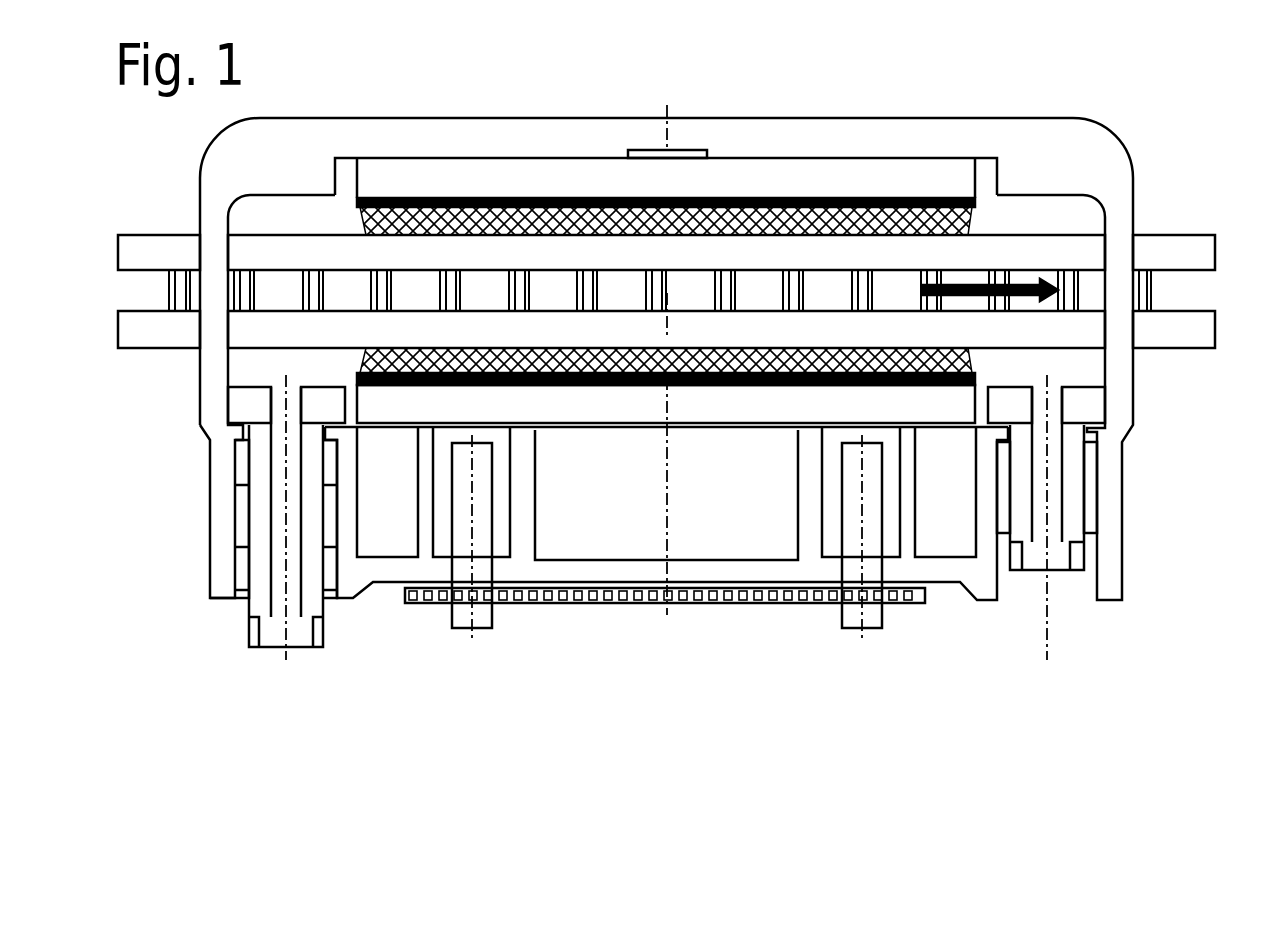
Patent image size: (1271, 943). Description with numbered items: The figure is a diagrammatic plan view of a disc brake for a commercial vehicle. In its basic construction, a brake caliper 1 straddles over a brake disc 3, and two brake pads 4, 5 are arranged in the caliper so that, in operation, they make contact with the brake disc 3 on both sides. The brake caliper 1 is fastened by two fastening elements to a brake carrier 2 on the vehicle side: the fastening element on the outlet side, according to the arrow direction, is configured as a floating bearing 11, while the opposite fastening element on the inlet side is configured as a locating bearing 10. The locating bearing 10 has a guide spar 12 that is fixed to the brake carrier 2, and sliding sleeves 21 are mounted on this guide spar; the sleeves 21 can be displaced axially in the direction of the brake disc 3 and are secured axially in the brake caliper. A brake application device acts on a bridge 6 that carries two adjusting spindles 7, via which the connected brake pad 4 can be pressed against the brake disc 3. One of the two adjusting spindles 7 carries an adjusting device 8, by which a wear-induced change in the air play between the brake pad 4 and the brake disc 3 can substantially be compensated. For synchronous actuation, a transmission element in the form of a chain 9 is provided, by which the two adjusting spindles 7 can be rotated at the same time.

The brake caliper 1 is at (1030, 152).
The brake carrier 2 is at (250, 412).
The brake disc 3 is at (1143, 227).
The brake pad 4 is at (975, 363).
The brake pad 5 is at (975, 223).
The bridge 6 is at (553, 562).
The adjusting spindle 7 is at (441, 563).
The adjusting device 8 is at (633, 608).
The chain 9 is at (738, 603).
The locating bearing 10 is at (242, 612).
The floating bearing 11 is at (1072, 577).
The guide spar 12 is at (308, 590).
The sliding sleeve 21 is at (242, 567).